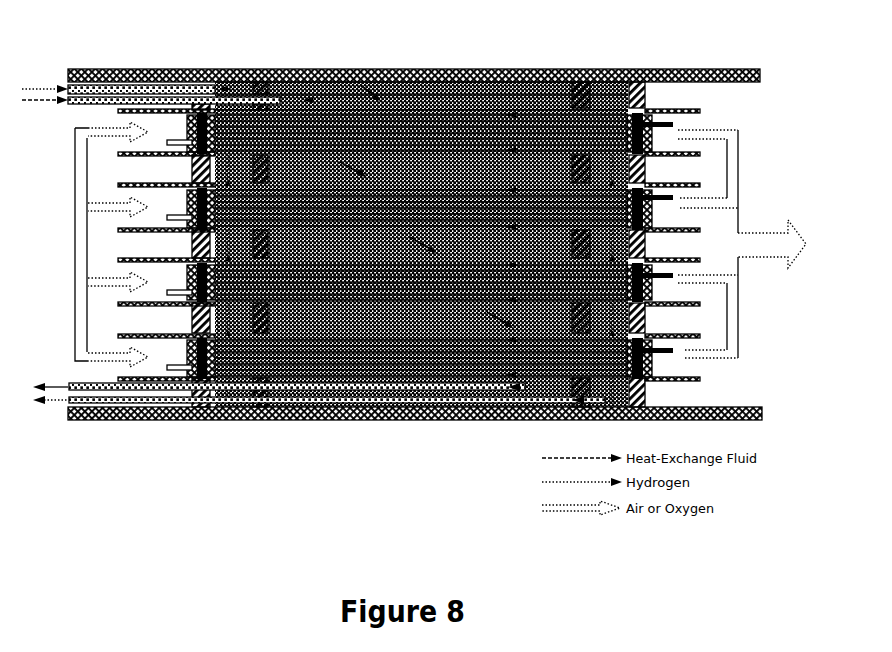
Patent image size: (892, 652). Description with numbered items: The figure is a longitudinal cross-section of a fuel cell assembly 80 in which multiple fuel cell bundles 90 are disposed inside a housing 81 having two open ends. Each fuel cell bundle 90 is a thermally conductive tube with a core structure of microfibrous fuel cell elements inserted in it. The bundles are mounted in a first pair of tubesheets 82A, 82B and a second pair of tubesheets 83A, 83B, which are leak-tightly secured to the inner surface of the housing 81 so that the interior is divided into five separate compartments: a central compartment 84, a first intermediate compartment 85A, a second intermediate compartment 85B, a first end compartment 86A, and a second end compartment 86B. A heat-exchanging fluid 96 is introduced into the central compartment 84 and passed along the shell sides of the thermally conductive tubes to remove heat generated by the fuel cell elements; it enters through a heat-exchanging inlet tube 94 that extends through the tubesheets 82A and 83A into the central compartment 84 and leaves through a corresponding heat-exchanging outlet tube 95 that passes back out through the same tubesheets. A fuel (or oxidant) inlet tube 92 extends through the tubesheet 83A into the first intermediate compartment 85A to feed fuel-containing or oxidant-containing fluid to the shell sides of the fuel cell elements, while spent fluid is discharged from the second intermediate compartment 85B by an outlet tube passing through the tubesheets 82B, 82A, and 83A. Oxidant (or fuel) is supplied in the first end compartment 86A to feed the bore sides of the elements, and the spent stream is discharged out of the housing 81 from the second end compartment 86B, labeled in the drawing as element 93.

The fuel cell assembly 80 is at (349, 456).
The housing 81 is at (720, 70).
The tubesheet 82A is at (270, 168).
The tubesheet 82B is at (572, 92).
The tubesheet 83A is at (192, 166).
The tubesheet 83B is at (645, 103).
The central compartment 84 is at (572, 31).
The first intermediate compartment 85A is at (259, 33).
The second intermediate compartment 85B is at (628, 33).
The first end compartment 86A is at (193, 33).
The second end compartment 86B is at (753, 30).
The fuel cell bundle 90 is at (667, 110).
The fuel (or oxidant) inlet tube 92 is at (112, 84).
The hydrogen outlet tube 93 is at (168, 421).
The heat-exchanging inlet tube 94 is at (158, 96).
The heat-exchanging outlet tube 95 is at (140, 421).
The heat-exchanging fluid 96 is at (360, 68).